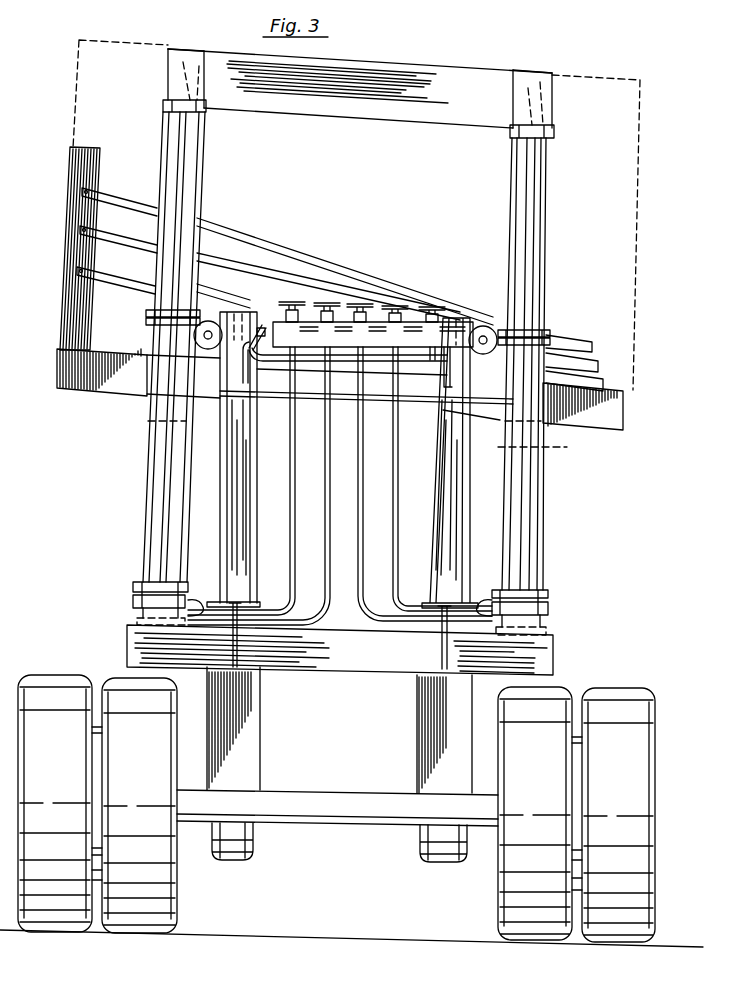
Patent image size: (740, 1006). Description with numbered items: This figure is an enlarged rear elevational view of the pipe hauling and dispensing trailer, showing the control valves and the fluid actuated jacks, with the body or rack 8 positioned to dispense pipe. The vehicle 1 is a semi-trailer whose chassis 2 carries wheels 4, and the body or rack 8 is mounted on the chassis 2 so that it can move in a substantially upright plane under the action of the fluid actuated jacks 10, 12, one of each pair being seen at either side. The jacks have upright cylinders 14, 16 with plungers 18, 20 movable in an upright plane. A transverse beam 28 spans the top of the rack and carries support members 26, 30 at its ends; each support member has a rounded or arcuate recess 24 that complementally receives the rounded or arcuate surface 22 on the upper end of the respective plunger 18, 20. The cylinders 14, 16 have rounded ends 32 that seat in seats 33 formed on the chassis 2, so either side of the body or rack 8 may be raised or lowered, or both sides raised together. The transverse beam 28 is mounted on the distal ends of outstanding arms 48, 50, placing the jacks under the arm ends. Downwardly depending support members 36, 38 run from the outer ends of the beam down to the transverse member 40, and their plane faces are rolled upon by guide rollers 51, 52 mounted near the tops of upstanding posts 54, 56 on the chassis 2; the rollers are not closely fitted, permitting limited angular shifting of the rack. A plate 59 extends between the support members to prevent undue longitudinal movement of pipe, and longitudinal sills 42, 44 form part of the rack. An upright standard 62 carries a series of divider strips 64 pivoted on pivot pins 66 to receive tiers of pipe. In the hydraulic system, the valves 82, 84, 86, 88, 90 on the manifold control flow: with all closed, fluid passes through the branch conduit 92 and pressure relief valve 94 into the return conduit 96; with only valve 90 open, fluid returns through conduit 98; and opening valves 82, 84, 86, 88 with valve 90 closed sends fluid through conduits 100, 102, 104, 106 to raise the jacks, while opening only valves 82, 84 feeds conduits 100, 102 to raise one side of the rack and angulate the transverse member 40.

The vehicle 1 is at (268, 718).
The chassis 2 is at (457, 673).
The wheels 4 is at (118, 935).
The body or rack 8 is at (497, 440).
The fluid actuated jack 10 is at (558, 473).
The fluid actuated jack 12 is at (138, 457).
The cylinder 14 is at (535, 508).
The cylinder 16 is at (147, 502).
The plunger 18 is at (548, 156).
The plunger 20 is at (172, 151).
The rounded or arcuate surface 22 is at (522, 130).
The rounded or arcuate recess 24 is at (201, 84).
The support member 26 is at (515, 128).
The transverse beam 28 is at (405, 66).
The support member 30 is at (210, 105).
The rounded end 32 is at (160, 615).
The seat 33 is at (140, 630).
The support member 36 is at (512, 192).
The support member 38 is at (162, 180).
The transverse member 40 is at (66, 372).
The longitudinal sill 42 is at (543, 446).
The longitudinal sill 44 is at (147, 401).
The outstanding arm 48 is at (545, 78).
The outstanding arm 50 is at (187, 50).
The guide roller 51 is at (490, 325).
The guide roller 52 is at (152, 300).
The upstanding post 54 is at (455, 545).
The upstanding post 56 is at (233, 525).
The plate 59 is at (636, 183).
The upright standard 62 is at (75, 266).
The divider strip 64 is at (100, 240).
The pivot pin 66 is at (83, 230).
The valve 82 is at (397, 302).
The valve 84 is at (362, 300).
The valve 86 is at (327, 300).
The valve 88 is at (296, 300).
The valve 90 is at (434, 302).
The branch conduit 92 is at (246, 380).
The pressure relief valve 94 is at (257, 322).
The return conduit 96 is at (385, 365).
The conduit 98 is at (447, 383).
The conduit 100 is at (396, 470).
The conduit 102 is at (363, 470).
The conduit 104 is at (328, 470).
The conduit 106 is at (293, 470).